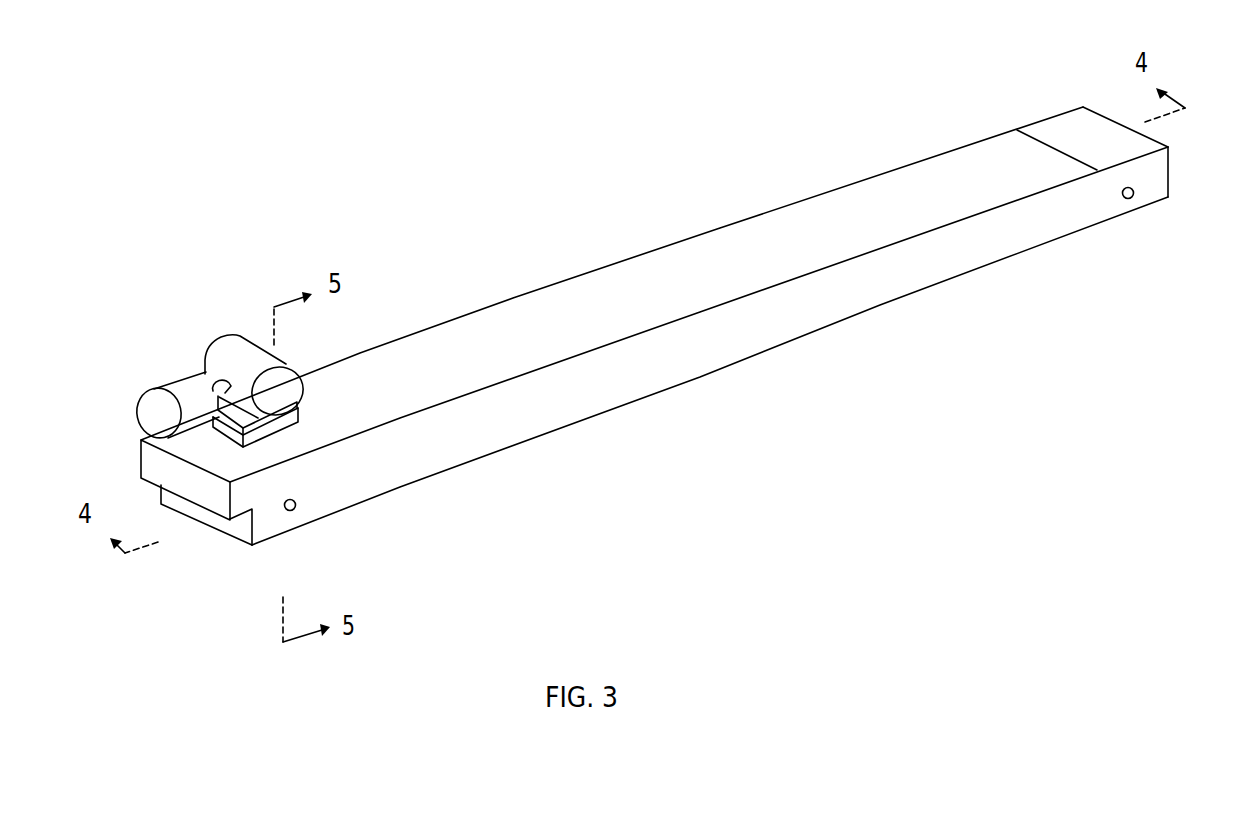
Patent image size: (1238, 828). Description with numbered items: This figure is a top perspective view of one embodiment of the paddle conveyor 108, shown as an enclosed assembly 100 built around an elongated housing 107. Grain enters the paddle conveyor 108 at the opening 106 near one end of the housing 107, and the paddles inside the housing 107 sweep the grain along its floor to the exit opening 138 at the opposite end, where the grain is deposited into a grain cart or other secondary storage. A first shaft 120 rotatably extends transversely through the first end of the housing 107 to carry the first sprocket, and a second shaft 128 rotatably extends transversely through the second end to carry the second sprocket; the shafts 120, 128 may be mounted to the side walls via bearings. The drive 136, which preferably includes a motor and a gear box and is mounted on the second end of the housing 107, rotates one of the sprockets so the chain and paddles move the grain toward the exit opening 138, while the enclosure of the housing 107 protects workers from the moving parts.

The sensor assembly 100 is at (530, 293).
The opening 106 is at (1088, 140).
The housing 107 is at (900, 280).
The paddle conveyor 108 is at (682, 258).
The first shaft 120 is at (1133, 200).
The second shaft 128 is at (295, 509).
The drive 136 is at (212, 353).
The exit opening 138 is at (207, 513).